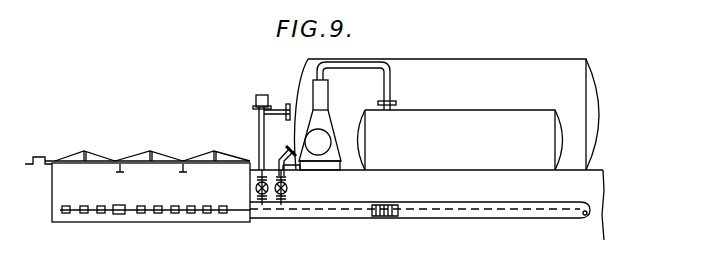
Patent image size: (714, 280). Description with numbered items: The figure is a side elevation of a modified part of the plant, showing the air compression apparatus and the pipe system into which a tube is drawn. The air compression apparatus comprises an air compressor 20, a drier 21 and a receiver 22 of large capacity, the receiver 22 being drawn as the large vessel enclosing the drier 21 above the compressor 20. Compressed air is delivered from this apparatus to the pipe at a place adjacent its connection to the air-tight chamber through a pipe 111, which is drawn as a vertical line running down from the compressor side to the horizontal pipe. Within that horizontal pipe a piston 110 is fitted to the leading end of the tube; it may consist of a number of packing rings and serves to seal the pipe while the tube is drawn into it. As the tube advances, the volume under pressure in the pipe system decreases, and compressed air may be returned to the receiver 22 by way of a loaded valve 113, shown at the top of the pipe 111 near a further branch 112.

The air compressor 20 is at (318, 150).
The drier 21 is at (470, 153).
The receiver 22 is at (495, 98).
The piston 110 is at (396, 214).
The pipe 111 is at (260, 124).
The elbow pipe 112 is at (277, 154).
The loaded valve 113 is at (257, 99).